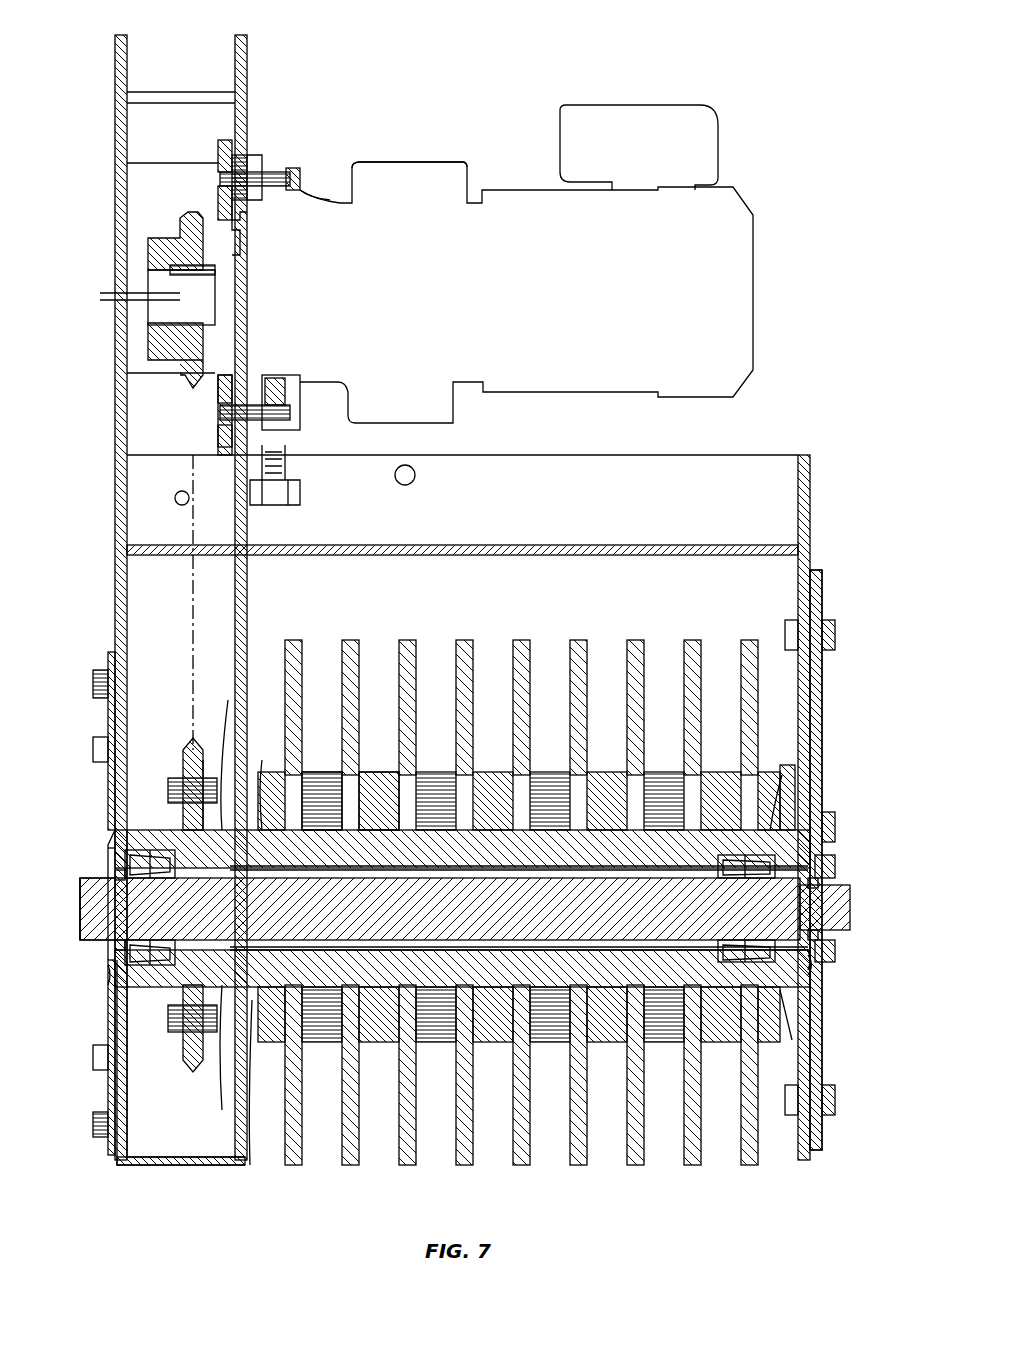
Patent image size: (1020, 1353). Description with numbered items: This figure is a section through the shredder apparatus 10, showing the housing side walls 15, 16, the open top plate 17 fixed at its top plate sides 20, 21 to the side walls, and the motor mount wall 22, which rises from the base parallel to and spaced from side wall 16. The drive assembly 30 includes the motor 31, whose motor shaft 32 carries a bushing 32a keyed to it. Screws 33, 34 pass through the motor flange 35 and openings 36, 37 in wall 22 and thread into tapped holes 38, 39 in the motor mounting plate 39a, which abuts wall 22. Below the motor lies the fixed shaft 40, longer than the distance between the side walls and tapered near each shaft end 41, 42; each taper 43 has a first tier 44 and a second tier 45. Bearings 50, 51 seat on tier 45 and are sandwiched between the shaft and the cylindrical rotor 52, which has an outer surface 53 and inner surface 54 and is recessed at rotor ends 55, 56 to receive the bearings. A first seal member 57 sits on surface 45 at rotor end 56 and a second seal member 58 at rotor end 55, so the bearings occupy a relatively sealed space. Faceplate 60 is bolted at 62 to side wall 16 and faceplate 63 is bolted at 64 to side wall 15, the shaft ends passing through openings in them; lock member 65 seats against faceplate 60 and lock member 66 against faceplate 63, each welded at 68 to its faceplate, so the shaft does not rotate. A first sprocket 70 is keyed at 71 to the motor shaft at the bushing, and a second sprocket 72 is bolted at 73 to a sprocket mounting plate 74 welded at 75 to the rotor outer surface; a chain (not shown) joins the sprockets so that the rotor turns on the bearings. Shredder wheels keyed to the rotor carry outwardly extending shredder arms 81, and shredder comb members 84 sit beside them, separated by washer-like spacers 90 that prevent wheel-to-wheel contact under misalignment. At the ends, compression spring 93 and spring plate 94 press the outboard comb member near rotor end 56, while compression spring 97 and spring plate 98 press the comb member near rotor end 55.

The shredder apparatus 10 is at (502, 62).
The side wall 15 is at (822, 585).
The side wall 16 is at (115, 470).
The open top plate 17 is at (450, 545).
The top plate side 20 is at (127, 540).
The top plate side 21 is at (798, 535).
The motor mount wall 22 is at (247, 530).
The drive assembly 30 is at (505, 400).
The motor 31 is at (395, 160).
The motor shaft 32 is at (127, 293).
The bushing 32a is at (165, 350).
The screw 33 is at (286, 170).
The screw 34 is at (300, 412).
The motor flange 35 is at (318, 200).
The opening 36 is at (247, 160).
The opening 37 is at (218, 438).
The tapped hole 38 is at (218, 148).
The tapped hole 39 is at (218, 398).
The motor mounting plate 39a is at (218, 460).
The fixed shaft 40 is at (218, 200).
The shaft end 41 is at (80, 912).
The shaft end 42 is at (850, 905).
The taper 43 is at (778, 950).
The first tier 44 is at (818, 935).
The second tier 45 is at (112, 985).
The bearing 50 is at (812, 855).
The bearing 51 is at (150, 830).
The cylindrical rotor 52 is at (435, 772).
The outer surface 53 is at (378, 772).
The inner surface 54 is at (322, 772).
The rotor end 55 is at (815, 830).
The rotor end 56 is at (115, 835).
The first seal member 57 is at (112, 850).
The second seal member 58 is at (815, 865).
The faceplate 60 is at (108, 712).
The bolt 62 is at (93, 1125).
The faceplate 63 is at (822, 700).
The bolt 64 is at (835, 1085).
The lock member 65 is at (90, 870).
The lock member 66 is at (835, 872).
The weld 68 is at (812, 962).
The first sprocket 70 is at (160, 238).
The key 71 is at (218, 260).
The second sprocket 72 is at (190, 745).
The bolt 73 is at (172, 1032).
The sprocket mounting plate 74 is at (205, 760).
The weld 75 is at (215, 1120).
The shredder arm 81 is at (745, 640).
The shredder comb member 84 is at (670, 1045).
The spacer 90 is at (725, 1045).
The compression spring 93 is at (262, 760).
The spring plate 94 is at (252, 1165).
The compression spring 97 is at (768, 765).
The spring plate 98 is at (778, 1045).